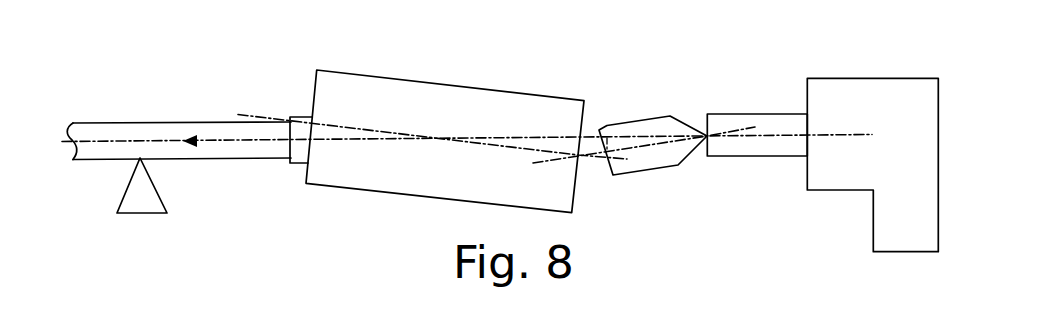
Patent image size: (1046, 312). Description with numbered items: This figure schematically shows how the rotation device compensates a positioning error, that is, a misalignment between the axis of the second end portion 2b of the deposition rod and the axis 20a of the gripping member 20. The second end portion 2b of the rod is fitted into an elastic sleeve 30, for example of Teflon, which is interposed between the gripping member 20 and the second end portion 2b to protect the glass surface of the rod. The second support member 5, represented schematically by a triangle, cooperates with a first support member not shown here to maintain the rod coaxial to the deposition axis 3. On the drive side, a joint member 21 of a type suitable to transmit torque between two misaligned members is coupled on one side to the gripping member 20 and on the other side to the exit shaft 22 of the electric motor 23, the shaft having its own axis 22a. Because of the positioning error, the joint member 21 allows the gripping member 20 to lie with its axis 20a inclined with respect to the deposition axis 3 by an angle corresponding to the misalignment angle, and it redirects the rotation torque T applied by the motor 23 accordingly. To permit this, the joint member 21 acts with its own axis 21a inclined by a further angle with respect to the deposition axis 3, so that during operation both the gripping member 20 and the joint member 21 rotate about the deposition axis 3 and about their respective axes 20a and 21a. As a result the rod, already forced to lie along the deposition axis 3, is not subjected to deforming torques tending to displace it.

The second end portion 2b is at (177, 130).
The deposition axis 3 is at (126, 141).
The second support member 5 is at (147, 203).
The rotation torque T is at (240, 143).
The elastic sleeve 30 is at (300, 156).
The gripping member 20 is at (503, 97).
The axis of gripping member 20a is at (330, 123).
The joint member 21 is at (647, 125).
The axis of joint member 21a is at (645, 145).
The exit shaft 22 is at (780, 120).
The axis of shaft 22a is at (773, 137).
The electric motor 23 is at (842, 92).